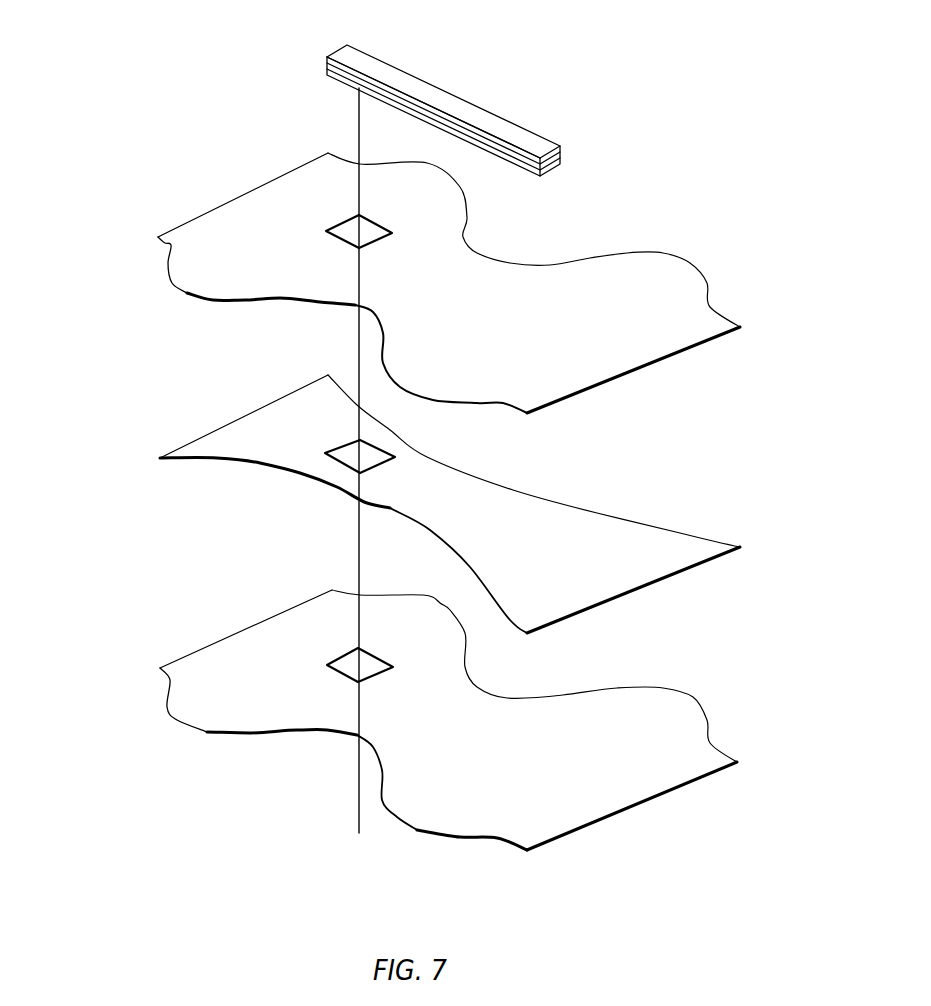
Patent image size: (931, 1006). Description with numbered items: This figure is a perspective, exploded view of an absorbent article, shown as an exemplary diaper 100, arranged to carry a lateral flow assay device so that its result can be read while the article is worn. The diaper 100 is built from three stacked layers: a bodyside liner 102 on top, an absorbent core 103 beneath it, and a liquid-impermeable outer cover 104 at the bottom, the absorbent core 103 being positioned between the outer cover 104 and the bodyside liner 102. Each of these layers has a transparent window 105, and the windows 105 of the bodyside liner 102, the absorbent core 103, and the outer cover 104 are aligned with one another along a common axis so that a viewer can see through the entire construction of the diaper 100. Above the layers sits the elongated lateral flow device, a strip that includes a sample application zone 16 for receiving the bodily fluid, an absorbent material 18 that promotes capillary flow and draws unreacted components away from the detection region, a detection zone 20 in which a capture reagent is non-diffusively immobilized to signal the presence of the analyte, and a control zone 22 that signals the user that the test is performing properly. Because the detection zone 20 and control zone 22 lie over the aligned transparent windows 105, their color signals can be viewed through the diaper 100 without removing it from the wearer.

The diaper 100 is at (745, 410).
The sample application zone 16 is at (537, 176).
The absorbent material 18 is at (330, 80).
The detection zone 20 is at (365, 100).
The control zone 22 is at (364, 94).
The bodyside liner 102 is at (309, 68).
The absorbent core 103 is at (250, 417).
The outer cover 104 is at (212, 683).
The transparent window 105 is at (392, 233).